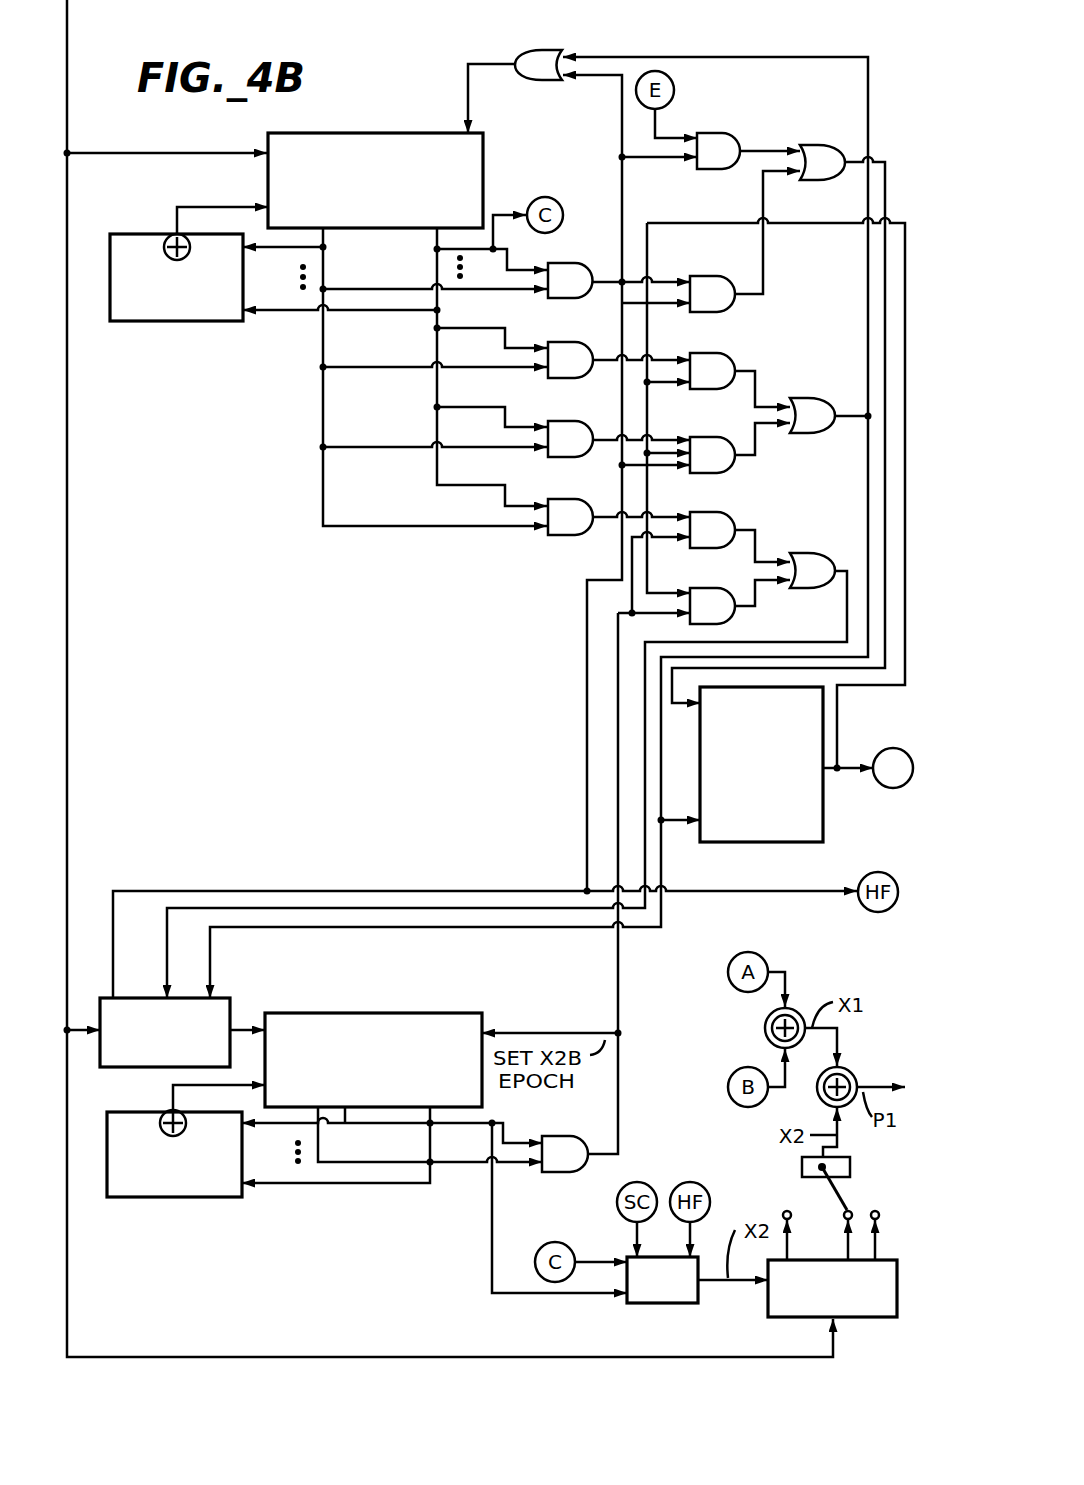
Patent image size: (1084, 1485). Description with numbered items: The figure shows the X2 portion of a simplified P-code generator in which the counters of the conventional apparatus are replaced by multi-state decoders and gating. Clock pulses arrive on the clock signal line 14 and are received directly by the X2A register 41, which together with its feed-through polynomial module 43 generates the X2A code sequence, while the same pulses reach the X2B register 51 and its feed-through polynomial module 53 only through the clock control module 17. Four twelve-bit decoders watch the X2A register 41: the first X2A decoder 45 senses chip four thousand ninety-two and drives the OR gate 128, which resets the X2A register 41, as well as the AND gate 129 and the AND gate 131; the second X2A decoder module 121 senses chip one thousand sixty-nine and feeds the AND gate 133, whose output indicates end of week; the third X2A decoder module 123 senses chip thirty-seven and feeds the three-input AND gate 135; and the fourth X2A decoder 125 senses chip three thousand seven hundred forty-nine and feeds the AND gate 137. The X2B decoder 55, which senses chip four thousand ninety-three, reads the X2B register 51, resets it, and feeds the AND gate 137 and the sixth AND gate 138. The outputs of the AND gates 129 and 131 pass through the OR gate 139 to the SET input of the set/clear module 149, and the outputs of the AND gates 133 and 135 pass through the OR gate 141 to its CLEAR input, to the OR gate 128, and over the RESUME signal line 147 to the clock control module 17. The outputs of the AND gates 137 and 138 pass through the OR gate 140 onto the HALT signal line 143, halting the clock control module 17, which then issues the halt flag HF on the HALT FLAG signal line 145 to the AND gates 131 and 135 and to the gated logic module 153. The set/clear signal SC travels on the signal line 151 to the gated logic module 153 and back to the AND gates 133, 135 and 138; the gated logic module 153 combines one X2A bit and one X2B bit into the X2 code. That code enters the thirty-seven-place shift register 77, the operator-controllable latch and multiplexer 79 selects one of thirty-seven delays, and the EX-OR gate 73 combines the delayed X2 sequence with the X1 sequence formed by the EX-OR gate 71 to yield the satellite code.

The clock signal line 14 is at (68, 102).
The X2A register 41 is at (415, 234).
The feed-through polynomial module 43 is at (245, 276).
The first X2A decoder 45 is at (560, 262).
The second X2A decoder module 121 is at (560, 341).
The third X2A decoder module 123 is at (560, 420).
The fourth X2A decoder 125 is at (560, 498).
The OR gate 128 is at (540, 50).
The AND gate 129 is at (710, 130).
The AND gate 131 is at (700, 276).
The AND gate 133 is at (700, 353).
The AND gate 135 is at (696, 437).
The AND gate 137 is at (698, 512).
The sixth AND gate 138 is at (698, 588).
The OR gate 139 is at (805, 145).
The OR gate 140 is at (795, 553).
The OR gate 141 is at (797, 398).
The HALT (counting) signal line 143 is at (411, 908).
The HALT FLAG signal line 145 is at (497, 888).
The RESUME signal line 147 is at (601, 930).
The set/clear module 149 is at (762, 843).
The signal line 151 is at (848, 766).
The clock control module 17 is at (155, 1070).
The X2B register 51 is at (410, 1110).
The feed-through polynomial module 53 is at (245, 1152).
The 4093-state decoder 55 is at (560, 1135).
The gated logic module 153 is at (658, 1305).
The EX-OR gate 71 is at (795, 1008).
The EX-OR gate 73 is at (852, 1067).
The 37-place shift register 77 is at (808, 1320).
The 6-bit latch and multiplexer 79 is at (850, 1157).